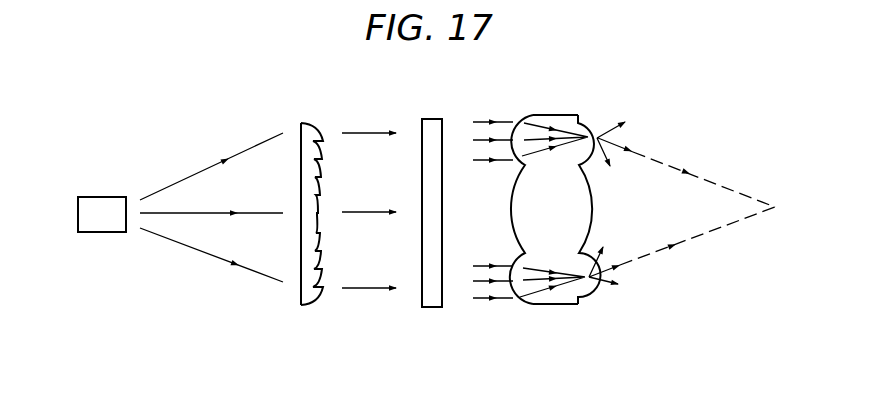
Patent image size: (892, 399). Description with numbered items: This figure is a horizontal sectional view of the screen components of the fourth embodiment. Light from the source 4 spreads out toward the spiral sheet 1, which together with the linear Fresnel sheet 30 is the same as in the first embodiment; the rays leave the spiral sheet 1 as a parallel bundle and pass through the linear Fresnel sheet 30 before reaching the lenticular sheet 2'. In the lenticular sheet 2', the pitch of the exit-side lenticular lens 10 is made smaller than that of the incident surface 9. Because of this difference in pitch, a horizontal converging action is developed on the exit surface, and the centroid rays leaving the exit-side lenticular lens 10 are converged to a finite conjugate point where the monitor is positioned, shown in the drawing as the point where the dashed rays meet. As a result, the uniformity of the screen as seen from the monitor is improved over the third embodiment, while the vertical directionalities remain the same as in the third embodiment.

The light source 4 is at (104, 197).
The spiral sheet 1 is at (307, 121).
The linear Fresnel sheet 30 is at (431, 119).
The lenticular sheet 2' is at (551, 190).
The incident surface 9 is at (510, 192).
The exit-side lenticular lens 10 is at (594, 193).